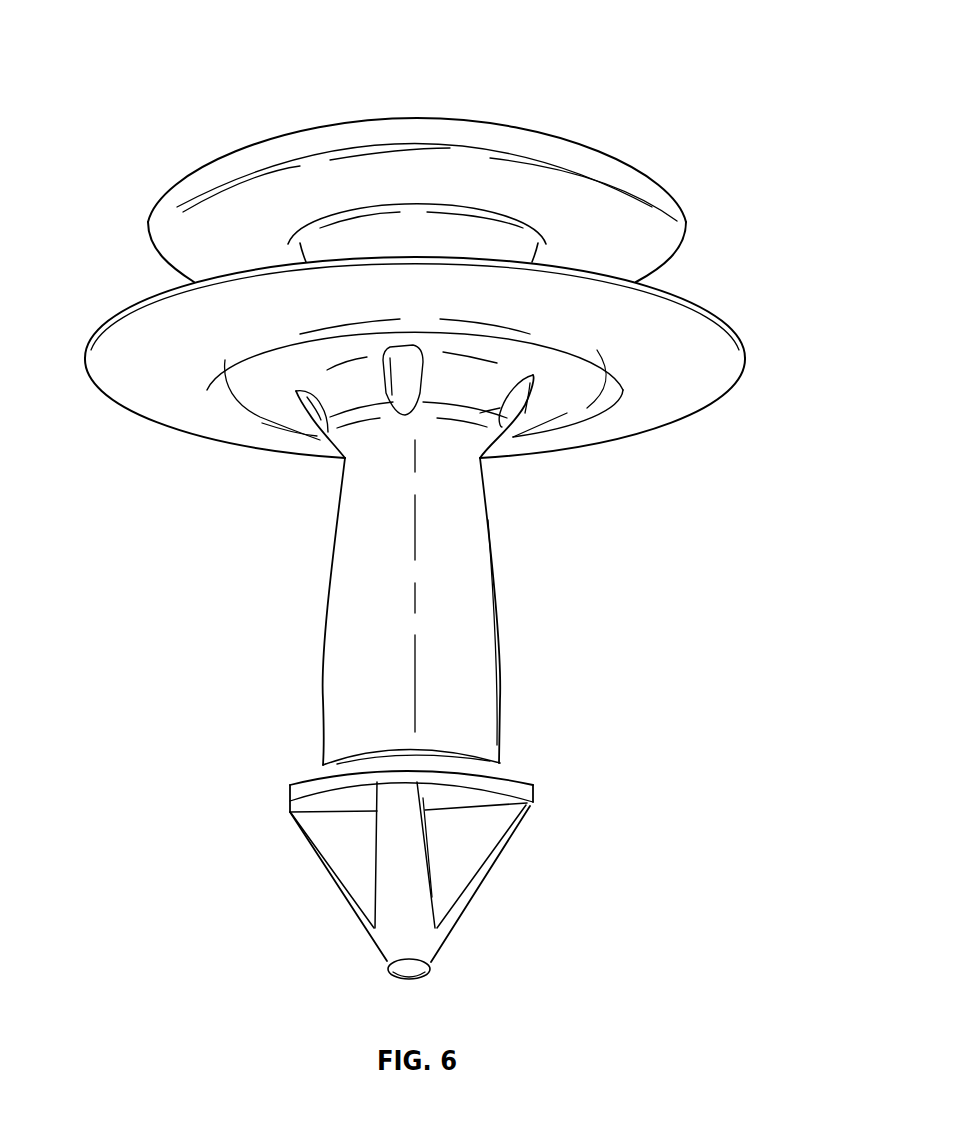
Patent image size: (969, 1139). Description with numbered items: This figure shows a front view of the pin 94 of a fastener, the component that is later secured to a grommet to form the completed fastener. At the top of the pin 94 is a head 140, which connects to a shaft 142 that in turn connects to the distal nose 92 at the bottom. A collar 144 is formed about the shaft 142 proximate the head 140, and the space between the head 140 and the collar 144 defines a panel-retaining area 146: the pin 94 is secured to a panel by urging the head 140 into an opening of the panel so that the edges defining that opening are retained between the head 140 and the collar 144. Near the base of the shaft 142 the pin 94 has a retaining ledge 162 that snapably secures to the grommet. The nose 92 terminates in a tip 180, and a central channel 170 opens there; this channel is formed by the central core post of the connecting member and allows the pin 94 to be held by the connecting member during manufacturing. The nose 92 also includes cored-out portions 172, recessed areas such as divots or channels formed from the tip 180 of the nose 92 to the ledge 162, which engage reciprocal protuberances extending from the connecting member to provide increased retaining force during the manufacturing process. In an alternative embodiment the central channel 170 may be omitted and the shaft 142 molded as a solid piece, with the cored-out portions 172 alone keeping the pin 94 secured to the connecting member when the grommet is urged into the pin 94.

The pin 94 is at (672, 89).
The head 140 is at (567, 140).
The panel-retaining area 146 is at (666, 258).
The collar 144 is at (735, 333).
The shaft 142 is at (493, 526).
The retaining ledge 162 is at (518, 774).
The distal nose 92 is at (473, 891).
The cored-out portions 172 is at (338, 842).
The central channel 170 is at (420, 968).
The tip 180 is at (388, 968).